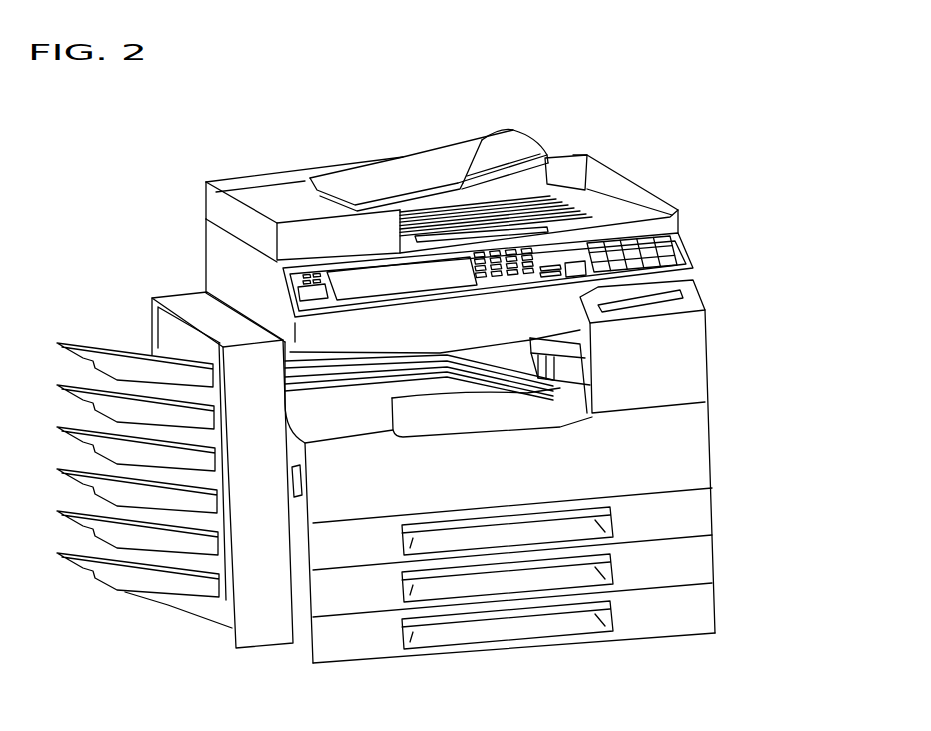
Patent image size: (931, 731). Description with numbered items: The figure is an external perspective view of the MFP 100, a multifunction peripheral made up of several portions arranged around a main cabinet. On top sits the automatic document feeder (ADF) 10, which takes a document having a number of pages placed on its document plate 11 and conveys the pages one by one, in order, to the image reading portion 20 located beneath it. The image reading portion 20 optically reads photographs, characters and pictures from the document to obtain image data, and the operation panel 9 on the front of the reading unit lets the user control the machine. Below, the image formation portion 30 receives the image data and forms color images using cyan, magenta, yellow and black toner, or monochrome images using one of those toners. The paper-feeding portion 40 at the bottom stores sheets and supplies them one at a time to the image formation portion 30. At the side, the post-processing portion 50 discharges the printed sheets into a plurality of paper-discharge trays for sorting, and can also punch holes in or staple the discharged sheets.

The MFP 100 is at (233, 101).
The automatic document feeder 10 is at (423, 180).
The document plate 11 is at (358, 187).
The image reading portion 20 is at (203, 263).
The operation panel 9 is at (555, 262).
The image formation portion 30 is at (713, 400).
The paper-feeding portion 40 is at (728, 485).
The post-processing portion 50 is at (207, 623).